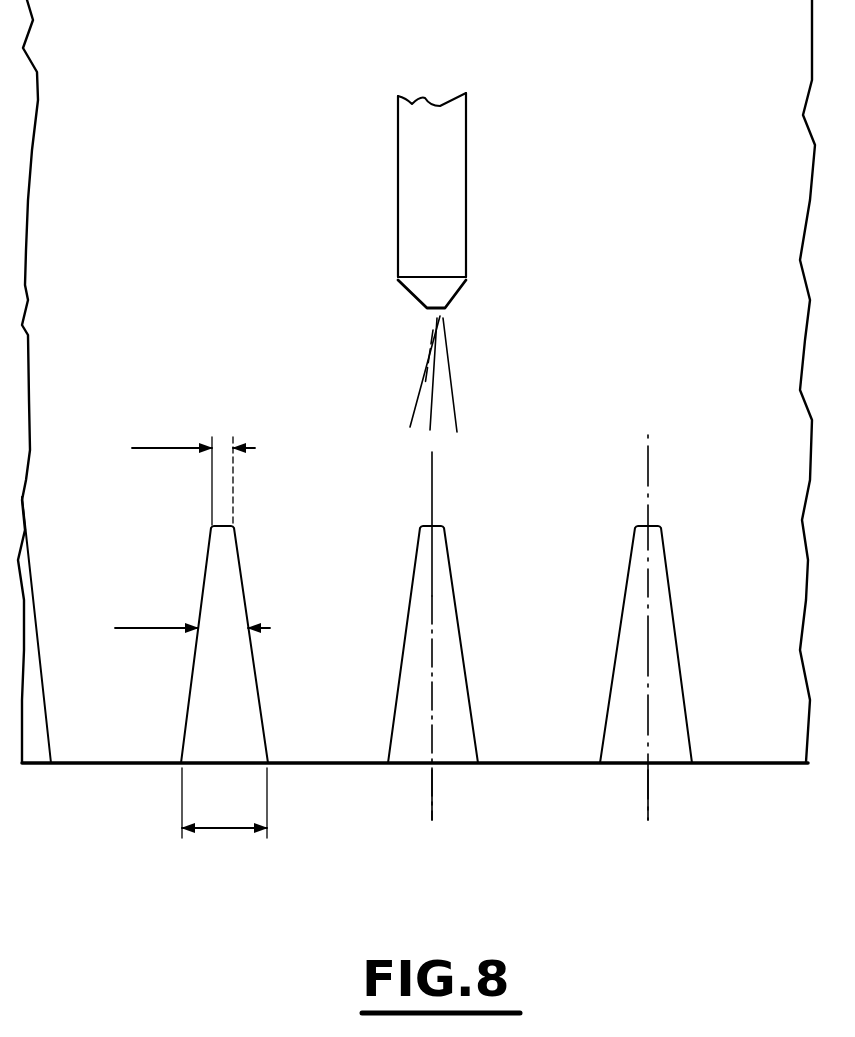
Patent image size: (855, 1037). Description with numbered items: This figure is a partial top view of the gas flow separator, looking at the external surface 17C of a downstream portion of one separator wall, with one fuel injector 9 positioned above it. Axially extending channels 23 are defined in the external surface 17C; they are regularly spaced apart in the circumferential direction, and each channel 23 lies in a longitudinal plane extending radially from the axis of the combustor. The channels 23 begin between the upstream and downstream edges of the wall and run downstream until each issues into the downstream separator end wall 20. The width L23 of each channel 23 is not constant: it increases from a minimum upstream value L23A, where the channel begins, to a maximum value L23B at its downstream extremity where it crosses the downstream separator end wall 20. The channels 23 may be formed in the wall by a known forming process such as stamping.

The fuel injector 9 is at (420, 135).
The external surface of separator wall 17C is at (650, 300).
The downstream separator end wall 20 is at (325, 770).
The channel 23 is at (412, 653).
The minimum upstream width of channel L23A is at (156, 448).
The width of channel L23 is at (172, 626).
The maximum downstream width of channel L23B is at (218, 832).